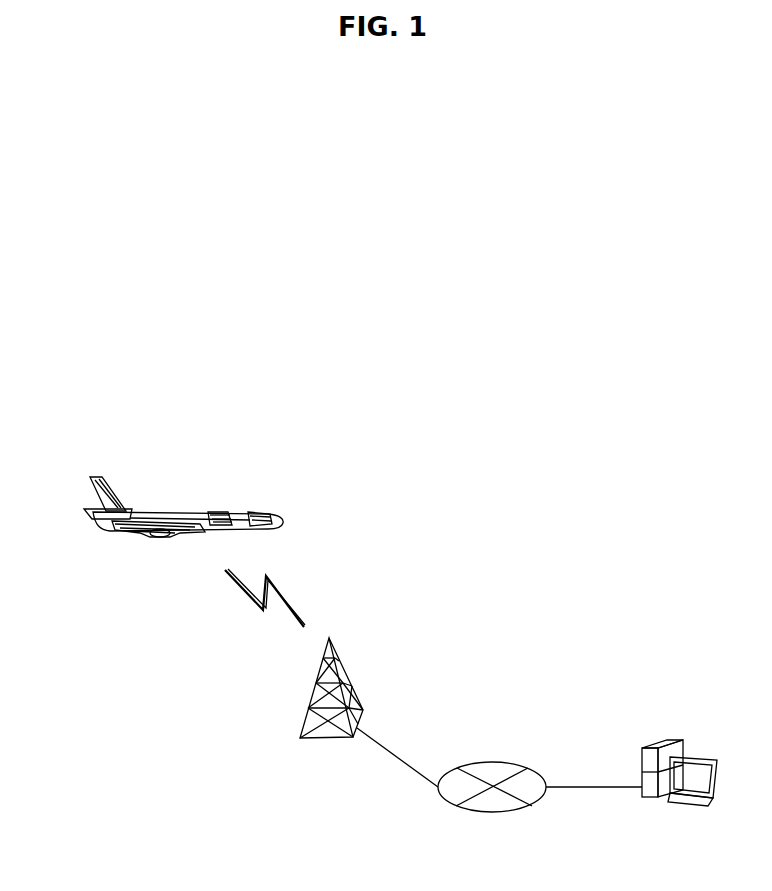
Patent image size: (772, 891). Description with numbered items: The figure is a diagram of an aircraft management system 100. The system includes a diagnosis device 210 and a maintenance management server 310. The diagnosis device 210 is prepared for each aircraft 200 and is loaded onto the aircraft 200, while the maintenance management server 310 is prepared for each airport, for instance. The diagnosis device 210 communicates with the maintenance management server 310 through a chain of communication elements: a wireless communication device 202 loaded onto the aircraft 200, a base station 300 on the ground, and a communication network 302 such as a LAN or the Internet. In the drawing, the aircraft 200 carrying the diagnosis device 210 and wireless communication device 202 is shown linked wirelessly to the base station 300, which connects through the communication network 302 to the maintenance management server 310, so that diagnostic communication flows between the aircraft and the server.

The aircraft management system 100 is at (600, 542).
The aircraft 200 is at (95, 494).
The diagnosis device 210 is at (216, 508).
The wireless communication device 202 is at (256, 508).
The base station 300 is at (343, 672).
The communication network 302 is at (490, 763).
The maintenance management server 310 is at (650, 742).